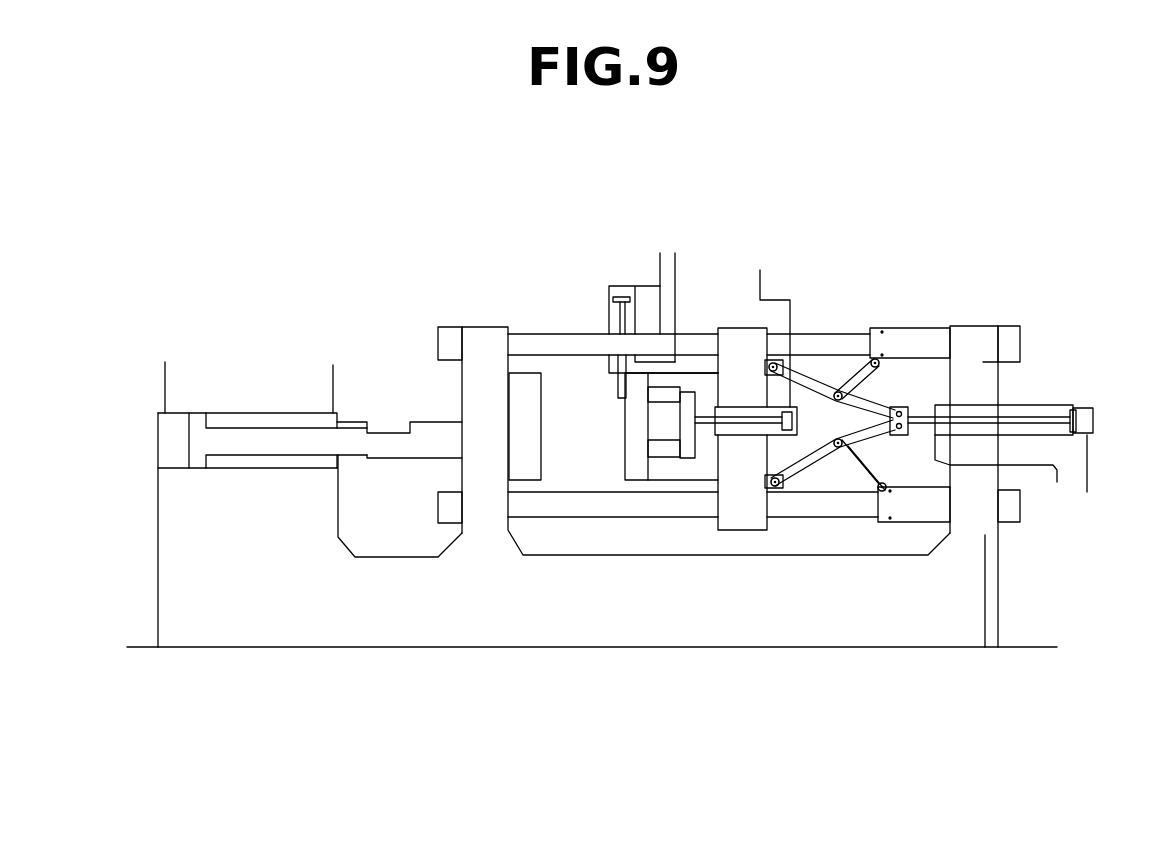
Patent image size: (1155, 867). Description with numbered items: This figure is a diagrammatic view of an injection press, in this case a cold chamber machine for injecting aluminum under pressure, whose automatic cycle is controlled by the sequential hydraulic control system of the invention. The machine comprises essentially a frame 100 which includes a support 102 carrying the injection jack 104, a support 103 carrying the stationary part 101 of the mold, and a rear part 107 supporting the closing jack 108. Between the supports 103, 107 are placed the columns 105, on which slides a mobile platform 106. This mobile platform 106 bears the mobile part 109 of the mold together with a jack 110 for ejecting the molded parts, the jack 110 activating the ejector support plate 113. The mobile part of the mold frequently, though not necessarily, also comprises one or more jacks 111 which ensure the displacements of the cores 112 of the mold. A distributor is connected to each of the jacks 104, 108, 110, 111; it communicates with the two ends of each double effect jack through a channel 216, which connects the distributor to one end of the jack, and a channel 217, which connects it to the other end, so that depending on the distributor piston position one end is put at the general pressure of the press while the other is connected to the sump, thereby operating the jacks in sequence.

The frame 100 is at (378, 647).
The stationary part of the mold 101 is at (527, 467).
The support of the injection jack 102 is at (275, 470).
The support of the stationary part of the mold 103 is at (480, 340).
The injection jack 104 is at (237, 422).
The columns 105 is at (818, 345).
The mobile platform 106 is at (740, 340).
The rear part 107 is at (973, 335).
The closing jack 108 is at (1040, 405).
The mobile part of the mold 109 is at (640, 467).
The jack for ejecting the molded parts 110 is at (778, 437).
The jacks insuring the displacements of the cores 111 is at (609, 290).
The cores of the mold 112 is at (615, 400).
The ejector support plate 113 is at (683, 453).
The channel 216 is at (333, 376).
The channel 217 is at (165, 374).